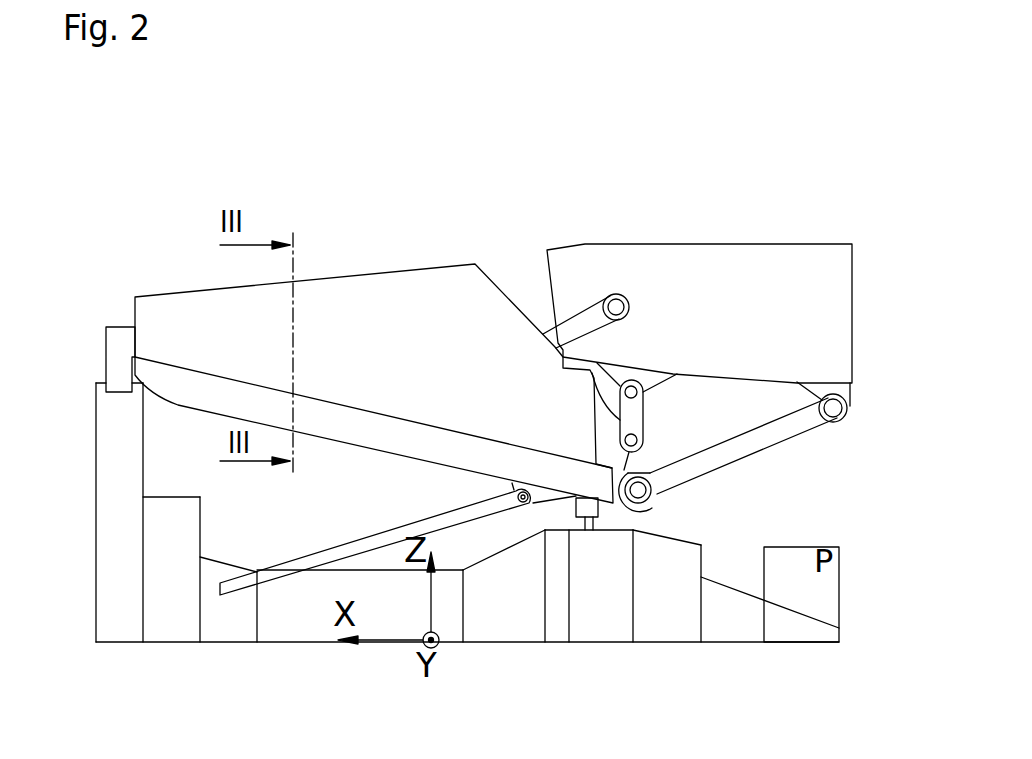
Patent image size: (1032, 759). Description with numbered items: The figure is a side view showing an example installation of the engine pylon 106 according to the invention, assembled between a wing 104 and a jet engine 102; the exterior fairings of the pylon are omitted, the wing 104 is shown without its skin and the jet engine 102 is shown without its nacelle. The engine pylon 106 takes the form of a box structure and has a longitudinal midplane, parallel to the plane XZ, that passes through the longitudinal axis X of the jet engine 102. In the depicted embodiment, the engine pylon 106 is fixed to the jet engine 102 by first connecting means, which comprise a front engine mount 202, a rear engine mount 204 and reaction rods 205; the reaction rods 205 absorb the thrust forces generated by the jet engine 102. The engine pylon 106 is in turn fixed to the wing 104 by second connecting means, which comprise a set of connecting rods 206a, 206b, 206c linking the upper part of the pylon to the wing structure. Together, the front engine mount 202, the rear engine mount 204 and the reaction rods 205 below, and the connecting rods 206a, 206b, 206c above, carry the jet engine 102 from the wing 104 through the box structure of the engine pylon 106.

The jet engine 102 is at (188, 613).
The wing 104 is at (748, 311).
The engine pylon 106 is at (425, 229).
The front engine mount 202 is at (120, 360).
The rear engine mount 204 is at (583, 530).
The reaction rods 205 is at (420, 527).
The connecting rod 206a is at (585, 318).
The connecting rod 206b is at (635, 422).
The connecting rod 206c is at (735, 448).